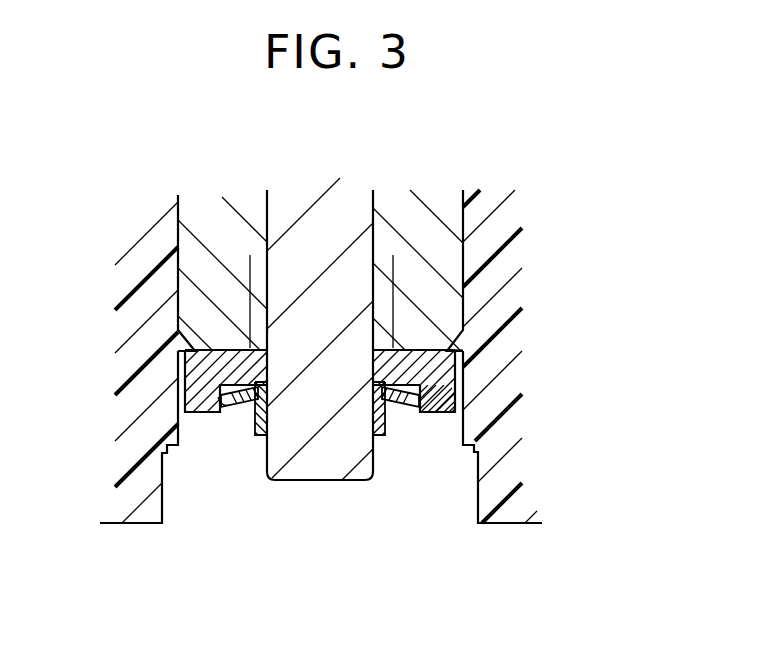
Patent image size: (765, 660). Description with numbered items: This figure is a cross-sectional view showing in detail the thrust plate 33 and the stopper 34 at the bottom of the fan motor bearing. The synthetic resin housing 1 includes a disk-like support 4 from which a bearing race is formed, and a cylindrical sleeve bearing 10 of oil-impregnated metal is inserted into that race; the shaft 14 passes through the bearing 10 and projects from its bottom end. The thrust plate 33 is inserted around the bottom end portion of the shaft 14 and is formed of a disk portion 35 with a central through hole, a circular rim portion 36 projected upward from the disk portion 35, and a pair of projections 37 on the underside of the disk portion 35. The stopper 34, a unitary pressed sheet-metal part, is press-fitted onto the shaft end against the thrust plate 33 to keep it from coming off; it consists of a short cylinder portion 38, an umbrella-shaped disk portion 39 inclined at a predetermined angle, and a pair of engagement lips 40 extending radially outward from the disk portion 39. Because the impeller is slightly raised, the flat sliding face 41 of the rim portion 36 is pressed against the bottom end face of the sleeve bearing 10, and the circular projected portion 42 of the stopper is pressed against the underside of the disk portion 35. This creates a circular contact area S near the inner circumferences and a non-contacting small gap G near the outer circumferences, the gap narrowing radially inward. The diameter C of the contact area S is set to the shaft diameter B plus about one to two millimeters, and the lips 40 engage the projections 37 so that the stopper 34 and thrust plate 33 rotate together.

The housing 1 is at (518, 527).
The support 4 is at (130, 524).
The sleeve bearing 10 is at (445, 228).
The shaft 14 is at (320, 485).
The thrust plate 33 is at (210, 414).
The stopper 34 is at (256, 435).
The disk portion 35 is at (375, 350).
The circular rim portion 36 is at (462, 335).
The projections 37 is at (197, 418).
The short cylinder portion 38 is at (382, 435).
The umbrella-shaped disk portion 39 is at (393, 410).
The engagement lips 40 is at (430, 413).
The flat sliding face 41 is at (403, 349).
The circular projected portion 42 is at (452, 370).
The circular contact area S is at (258, 372).
The non-contacting small gap G is at (457, 390).
The diameter of the shaft B is at (267, 219).
The diameter of the circular contact area C is at (393, 268).